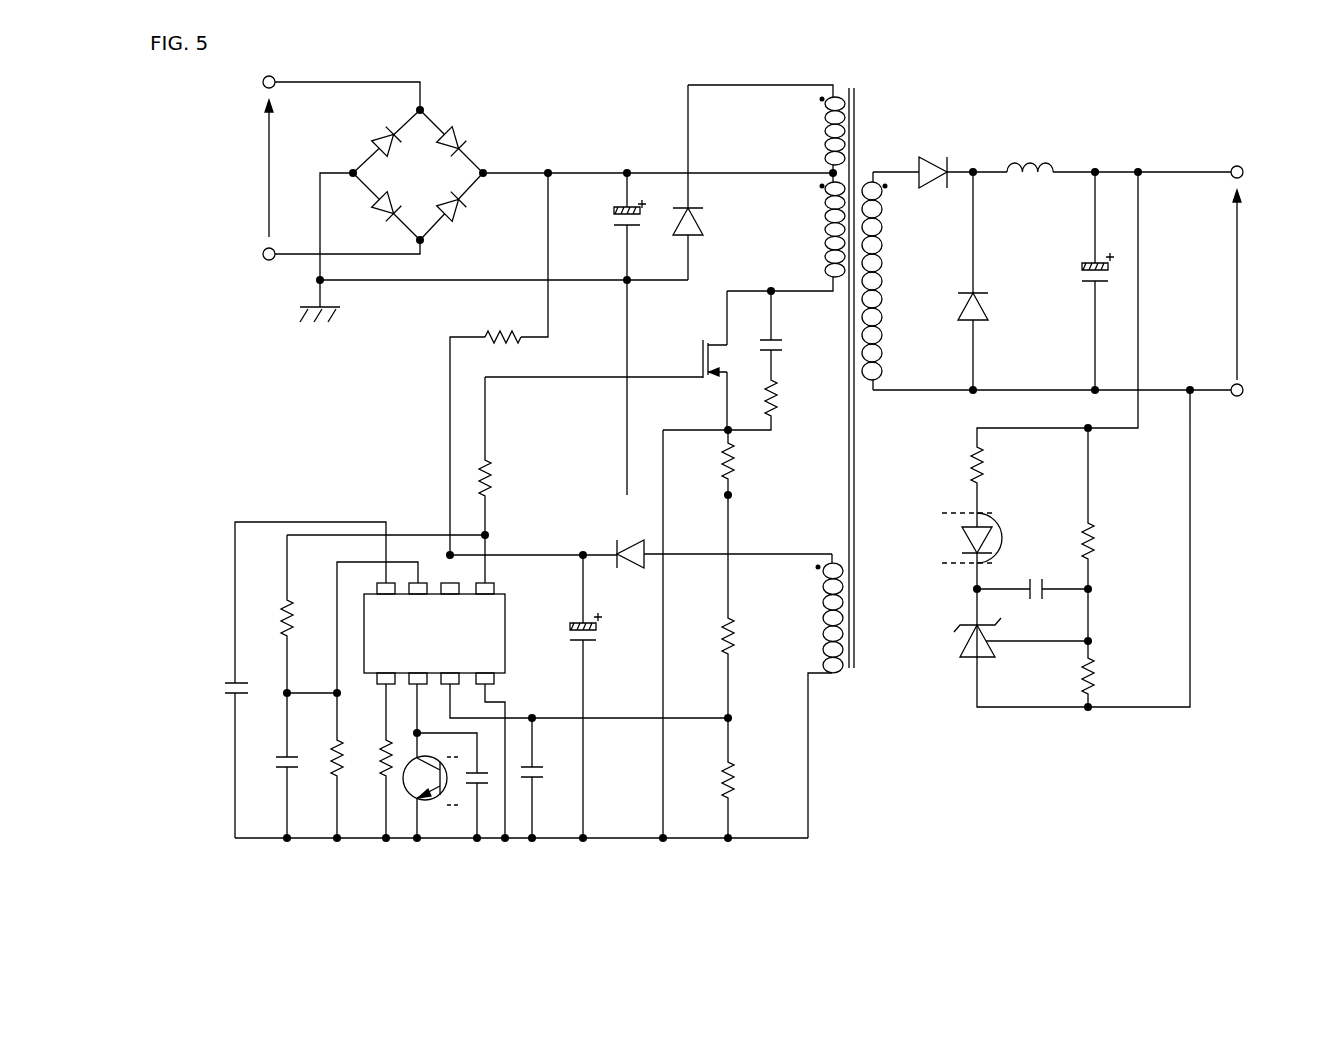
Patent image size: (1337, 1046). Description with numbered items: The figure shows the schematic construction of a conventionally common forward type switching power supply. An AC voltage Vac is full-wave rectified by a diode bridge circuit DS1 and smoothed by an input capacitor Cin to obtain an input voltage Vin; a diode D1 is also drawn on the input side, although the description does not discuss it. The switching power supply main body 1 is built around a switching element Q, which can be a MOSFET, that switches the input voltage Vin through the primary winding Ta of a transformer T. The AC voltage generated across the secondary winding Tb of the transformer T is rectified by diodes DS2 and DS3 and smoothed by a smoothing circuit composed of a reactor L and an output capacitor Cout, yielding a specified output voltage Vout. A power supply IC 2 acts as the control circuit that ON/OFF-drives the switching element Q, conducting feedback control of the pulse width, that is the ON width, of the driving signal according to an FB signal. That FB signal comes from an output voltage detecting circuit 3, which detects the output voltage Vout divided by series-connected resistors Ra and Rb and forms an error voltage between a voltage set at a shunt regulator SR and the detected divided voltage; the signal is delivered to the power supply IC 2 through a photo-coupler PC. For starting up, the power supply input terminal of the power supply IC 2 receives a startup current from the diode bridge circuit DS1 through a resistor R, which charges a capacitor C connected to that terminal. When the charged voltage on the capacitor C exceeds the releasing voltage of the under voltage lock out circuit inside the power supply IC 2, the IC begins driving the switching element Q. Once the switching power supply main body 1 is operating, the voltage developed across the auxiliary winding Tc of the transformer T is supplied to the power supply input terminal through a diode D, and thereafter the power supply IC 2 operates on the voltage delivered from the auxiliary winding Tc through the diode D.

The switching power supply main body 1 is at (909, 123).
The power supply IC 2 is at (497, 628).
The output voltage detecting circuit 3 is at (1135, 491).
The diode bridge circuit DS1 is at (425, 165).
The input capacitor Cin is at (618, 334).
The diode D1 is at (702, 182).
The resistor R is at (499, 364).
The transformer T is at (803, 448).
The primary winding Ta is at (766, 188).
The secondary winding Tb is at (890, 281).
The auxiliary winding Tc is at (813, 696).
The switching element Q is at (606, 360).
The diode D is at (724, 540).
The capacitor C is at (592, 696).
The diode DS2 is at (950, 159).
The diode DS3 is at (952, 281).
The reactor L is at (1030, 151).
The output capacitor Cout is at (1069, 281).
The photo-coupler PC is at (714, 662).
The shunt regulator SR is at (1013, 652).
The resistor Ra is at (1110, 508).
The resistor Rb is at (1111, 648).
The AC voltage Vac is at (245, 168).
The input voltage Vin is at (626, 158).
The output voltage Vout is at (1265, 285).